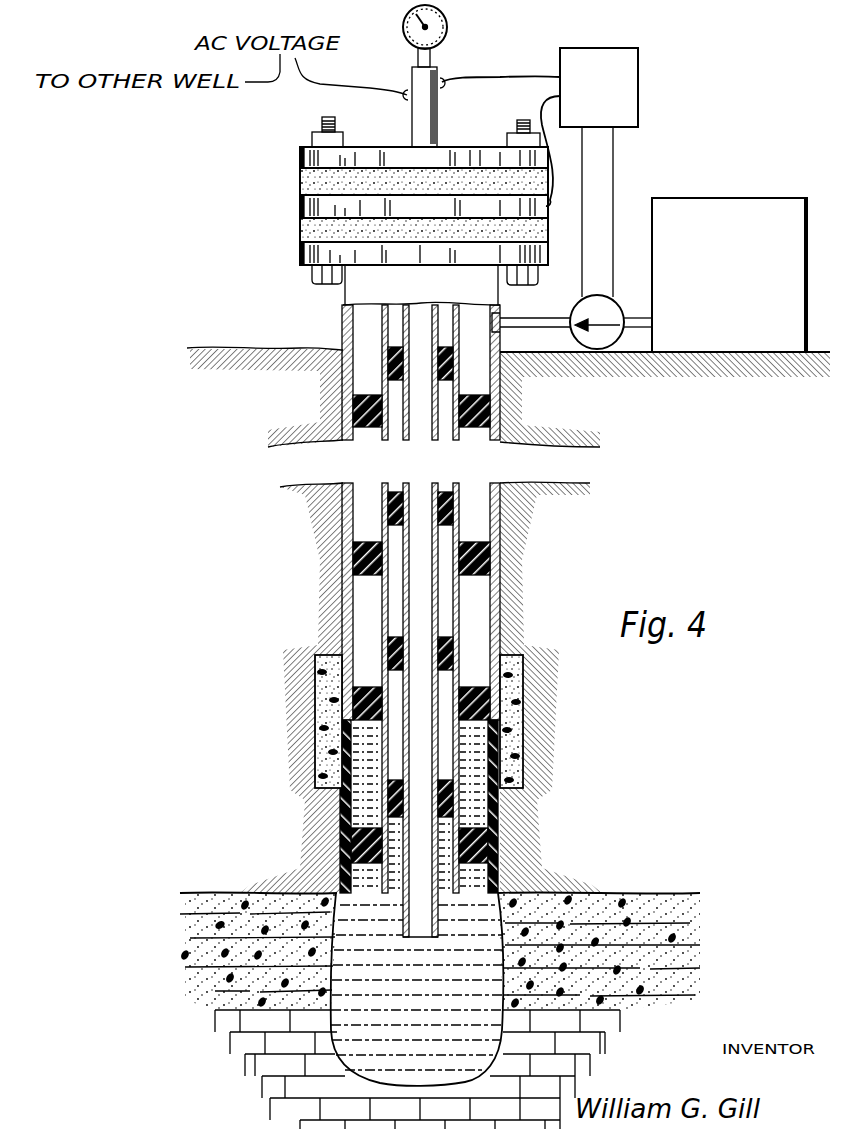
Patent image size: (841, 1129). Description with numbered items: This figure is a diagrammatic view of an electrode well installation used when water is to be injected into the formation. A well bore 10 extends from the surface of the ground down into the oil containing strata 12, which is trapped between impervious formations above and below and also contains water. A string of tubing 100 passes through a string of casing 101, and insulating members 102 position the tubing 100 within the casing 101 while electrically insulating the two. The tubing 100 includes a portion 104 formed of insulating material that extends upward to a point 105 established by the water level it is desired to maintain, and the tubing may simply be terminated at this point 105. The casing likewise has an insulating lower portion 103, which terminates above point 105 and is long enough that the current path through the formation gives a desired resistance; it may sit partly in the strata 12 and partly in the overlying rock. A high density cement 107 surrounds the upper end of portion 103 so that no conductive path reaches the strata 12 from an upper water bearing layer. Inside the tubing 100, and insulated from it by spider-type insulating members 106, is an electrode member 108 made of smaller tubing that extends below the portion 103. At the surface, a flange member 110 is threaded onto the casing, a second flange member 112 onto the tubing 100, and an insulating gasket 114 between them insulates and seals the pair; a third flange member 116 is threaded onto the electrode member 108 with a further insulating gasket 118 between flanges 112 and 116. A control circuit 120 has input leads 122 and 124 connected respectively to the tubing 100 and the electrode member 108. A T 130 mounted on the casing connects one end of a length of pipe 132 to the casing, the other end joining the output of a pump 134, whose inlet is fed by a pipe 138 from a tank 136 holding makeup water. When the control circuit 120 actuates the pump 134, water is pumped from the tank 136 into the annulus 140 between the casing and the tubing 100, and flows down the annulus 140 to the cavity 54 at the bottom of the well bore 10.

The well bore 10 is at (500, 624).
The oil containing strata 12 is at (640, 918).
The cavity 54 is at (418, 995).
The string of tubing 100 is at (440, 600).
The string of casing 101 is at (525, 668).
The insulating members 102 is at (484, 560).
The insulating lower portion of casing 103 is at (495, 845).
The insulating portion of tubing 104 is at (440, 900).
The point established by water level 105 is at (530, 795).
The insulating members 106 is at (444, 495).
The high density cement 107 is at (515, 728).
The electrode member 108 is at (400, 600).
The flange member 110 is at (300, 255).
The second flange member 112 is at (300, 207).
The insulating gasket 114 is at (300, 233).
The third flange member 116 is at (300, 155).
The gasket 118 is at (300, 182).
The control circuit 120 is at (640, 62).
The input lead 122 is at (541, 107).
The input lead 124 is at (510, 55).
The T 130 is at (503, 318).
The length of pipe 132 is at (562, 325).
The pump 134 is at (597, 350).
The tank 136 is at (690, 197).
The pipe 138 is at (636, 318).
The annulus 140 is at (368, 337).